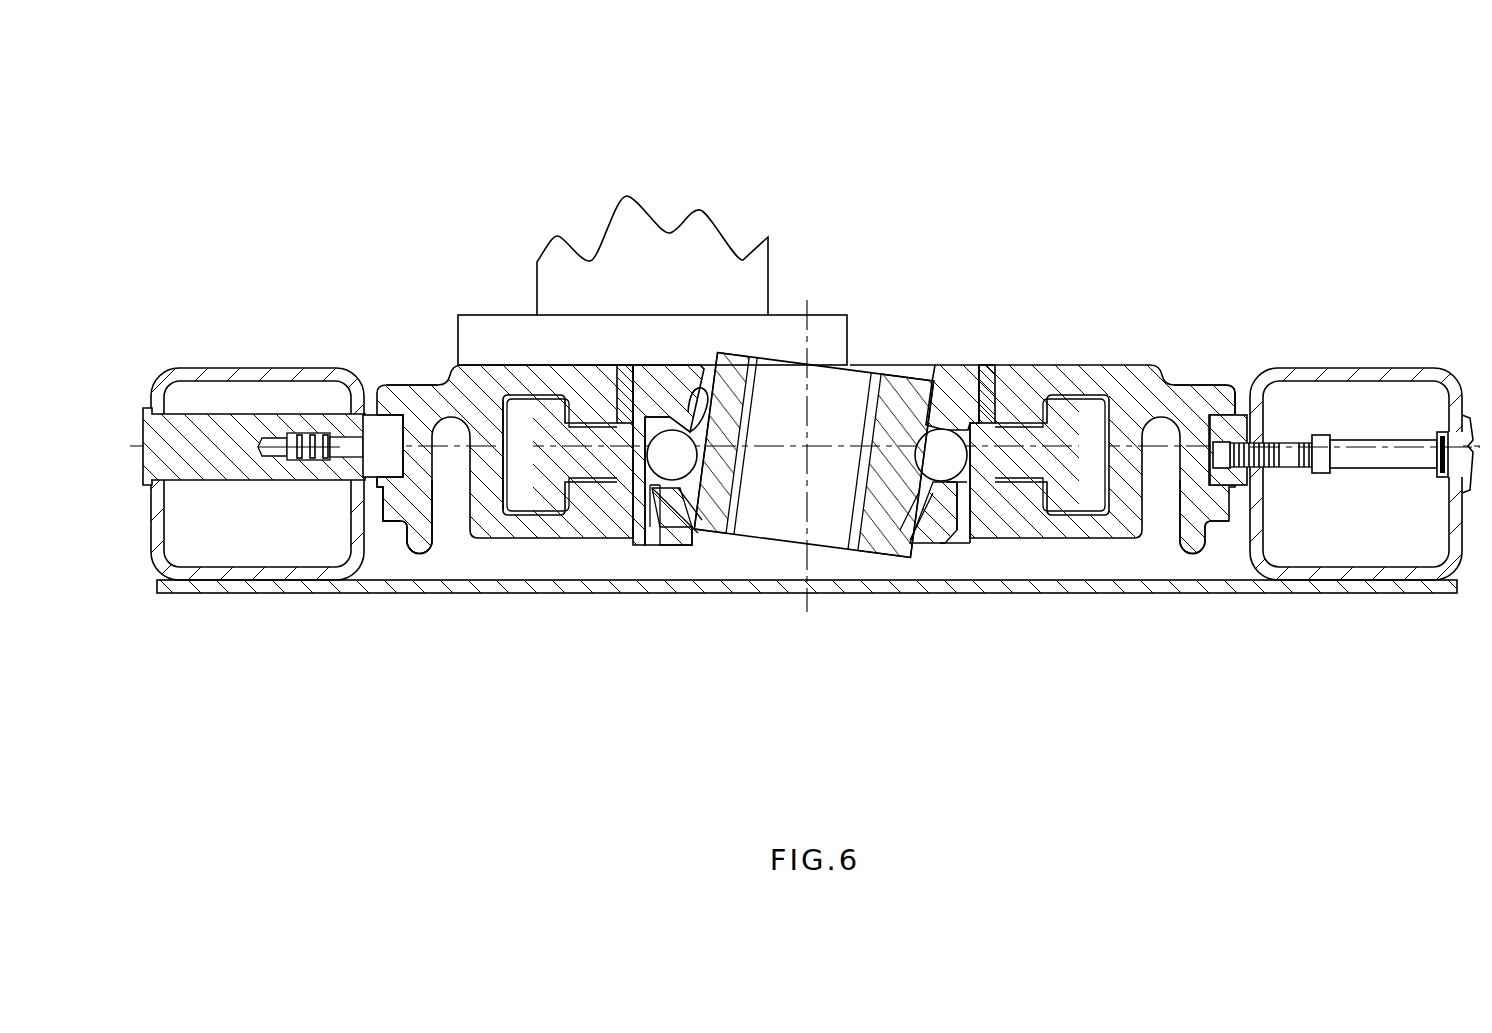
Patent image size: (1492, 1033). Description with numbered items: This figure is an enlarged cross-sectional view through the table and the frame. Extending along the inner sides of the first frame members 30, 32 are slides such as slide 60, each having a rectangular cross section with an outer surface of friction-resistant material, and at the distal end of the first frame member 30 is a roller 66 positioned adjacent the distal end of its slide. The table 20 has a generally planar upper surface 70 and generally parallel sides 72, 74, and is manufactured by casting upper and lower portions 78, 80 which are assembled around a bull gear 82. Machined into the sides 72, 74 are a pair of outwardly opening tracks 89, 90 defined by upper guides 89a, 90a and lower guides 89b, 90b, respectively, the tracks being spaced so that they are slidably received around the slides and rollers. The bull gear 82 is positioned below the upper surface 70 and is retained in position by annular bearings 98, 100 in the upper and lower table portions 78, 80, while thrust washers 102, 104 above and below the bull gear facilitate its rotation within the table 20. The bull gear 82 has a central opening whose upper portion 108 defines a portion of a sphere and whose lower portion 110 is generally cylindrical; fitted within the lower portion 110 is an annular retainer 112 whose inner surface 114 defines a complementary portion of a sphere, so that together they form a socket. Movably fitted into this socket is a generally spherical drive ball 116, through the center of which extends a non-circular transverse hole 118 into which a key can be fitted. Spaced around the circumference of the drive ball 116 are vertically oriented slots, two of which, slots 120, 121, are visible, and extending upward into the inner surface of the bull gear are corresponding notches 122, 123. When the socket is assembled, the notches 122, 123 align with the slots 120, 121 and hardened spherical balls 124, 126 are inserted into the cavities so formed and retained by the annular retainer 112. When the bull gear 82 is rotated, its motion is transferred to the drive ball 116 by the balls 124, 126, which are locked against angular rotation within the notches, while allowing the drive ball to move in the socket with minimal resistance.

The table 20 is at (1120, 365).
The first frame member 30 is at (247, 366).
The first frame member 32 is at (1358, 368).
The slide 60 is at (1222, 400).
The roller 66 is at (363, 412).
The upper surface 70 is at (1068, 365).
The side 72 is at (420, 553).
The side 74 is at (1192, 553).
The upper portion 78 is at (503, 365).
The lower portion 80 is at (545, 538).
The bull gear 82 is at (1070, 495).
The track 89 is at (403, 465).
The upper guide 89a is at (410, 385).
The lower guide 89b is at (383, 490).
The track 90 is at (1215, 484).
The upper guide 90a is at (1235, 395).
The lower guide 90b is at (1246, 488).
The annular bearing 98 is at (621, 365).
The annular bearing 100 is at (620, 538).
The thrust washer 102 is at (993, 365).
The thrust washer 104 is at (985, 540).
The upper portion of central opening 108 is at (690, 385).
The lower portion of central opening 110 is at (660, 540).
The annular retainer 112 is at (945, 543).
The inner surface 114 is at (925, 543).
The drive ball 116 is at (720, 358).
The transverse hole 118 is at (882, 428).
The slot 120 is at (713, 535).
The slot 121 is at (923, 513).
The notch 122 is at (670, 547).
The notch 123 is at (970, 543).
The hardened spherical ball 124 is at (693, 537).
The hardened spherical ball 126 is at (913, 428).